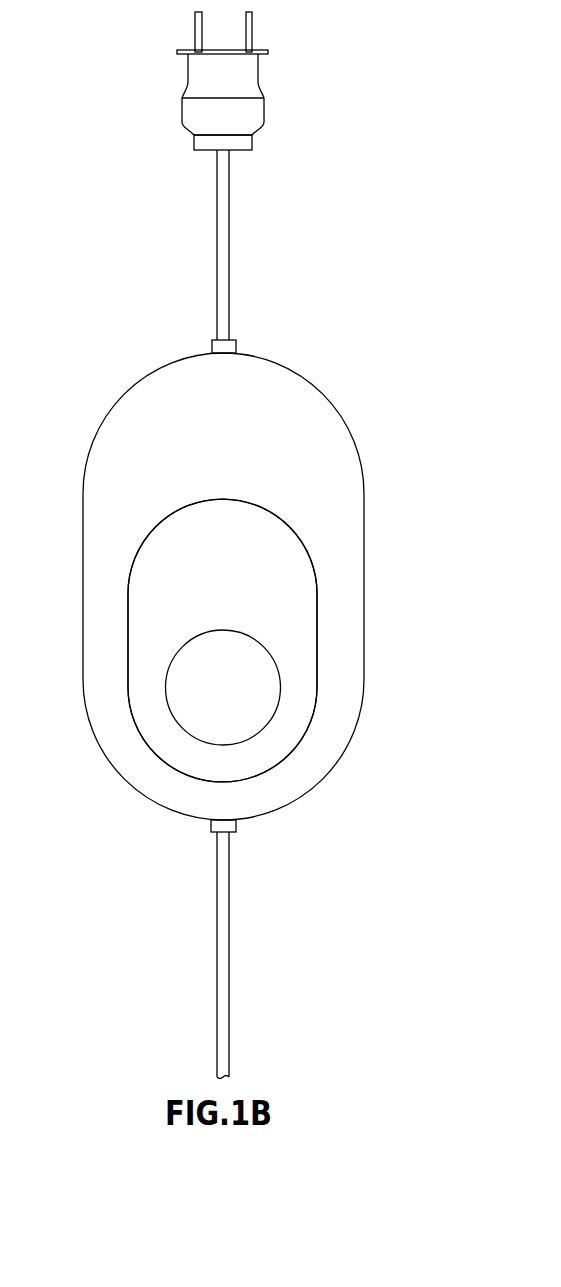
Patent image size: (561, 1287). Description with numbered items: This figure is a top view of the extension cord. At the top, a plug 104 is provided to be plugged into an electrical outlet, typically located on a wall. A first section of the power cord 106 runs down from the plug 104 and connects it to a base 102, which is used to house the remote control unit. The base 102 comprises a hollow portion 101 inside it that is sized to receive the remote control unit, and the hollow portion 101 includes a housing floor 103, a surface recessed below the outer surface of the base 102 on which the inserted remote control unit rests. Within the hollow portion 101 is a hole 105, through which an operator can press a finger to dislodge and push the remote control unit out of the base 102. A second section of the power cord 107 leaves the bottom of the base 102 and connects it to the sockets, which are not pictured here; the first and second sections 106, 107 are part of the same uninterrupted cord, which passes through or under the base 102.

The hollow portion 101 is at (230, 782).
The base 102 is at (83, 500).
The housing floor 103 is at (175, 595).
The plug 104 is at (183, 97).
The hole 105 is at (213, 687).
The first section of the power cord 106 is at (212, 258).
The second section of the power cord 107 is at (217, 964).